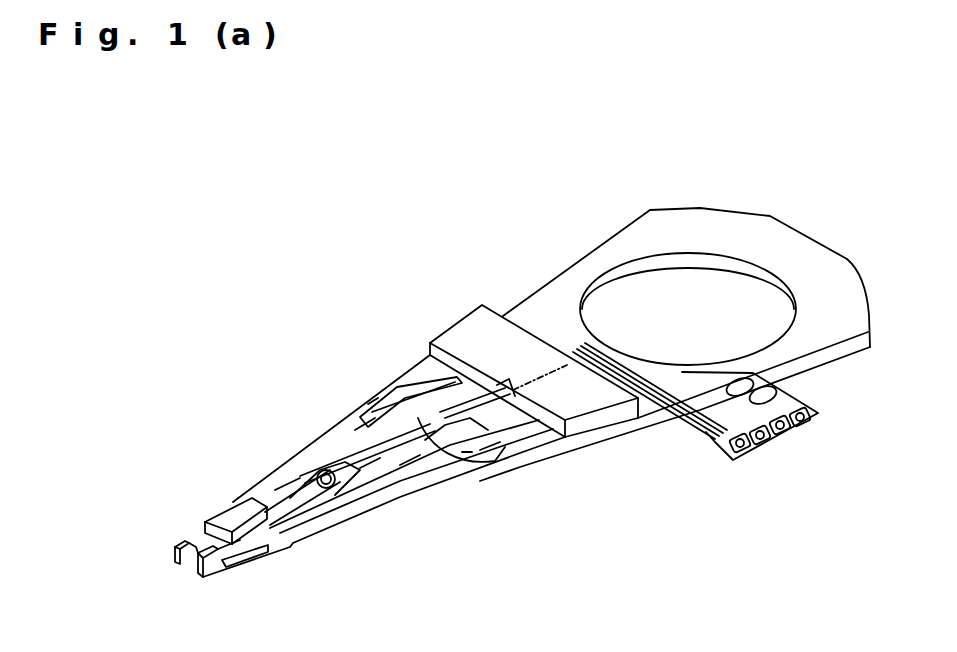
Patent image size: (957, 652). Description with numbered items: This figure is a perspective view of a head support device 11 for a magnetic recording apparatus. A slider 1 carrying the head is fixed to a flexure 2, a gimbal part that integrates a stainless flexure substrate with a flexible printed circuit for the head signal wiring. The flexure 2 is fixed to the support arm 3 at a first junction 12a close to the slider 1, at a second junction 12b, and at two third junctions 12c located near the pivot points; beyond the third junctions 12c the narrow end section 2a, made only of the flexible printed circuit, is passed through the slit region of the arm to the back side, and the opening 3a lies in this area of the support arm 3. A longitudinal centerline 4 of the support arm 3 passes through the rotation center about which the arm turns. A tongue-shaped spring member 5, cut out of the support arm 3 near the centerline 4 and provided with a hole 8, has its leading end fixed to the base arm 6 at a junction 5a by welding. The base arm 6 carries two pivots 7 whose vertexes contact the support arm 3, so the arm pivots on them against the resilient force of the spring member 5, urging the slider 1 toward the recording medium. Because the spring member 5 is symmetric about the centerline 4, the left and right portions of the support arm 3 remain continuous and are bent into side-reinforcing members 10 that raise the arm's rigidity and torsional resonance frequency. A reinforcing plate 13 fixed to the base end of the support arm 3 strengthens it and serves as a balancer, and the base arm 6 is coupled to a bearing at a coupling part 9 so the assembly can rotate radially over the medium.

The slider 1 is at (205, 524).
The flexure 2 is at (262, 510).
The end section 2a is at (628, 418).
The support arm 3 is at (323, 445).
The load beam opening 3a is at (493, 457).
The longitudinal centerline 4 is at (503, 392).
The spring member 5 is at (416, 400).
The junction 5a is at (408, 462).
The base arm 6 is at (530, 323).
The pivots 7 is at (365, 416).
The hole 8 is at (443, 492).
The coupling part 9 is at (752, 360).
The side-reinforcing members 10 is at (292, 548).
The head support device 11 is at (244, 253).
The first junction 12a is at (287, 478).
The second junction 12b is at (370, 463).
The third junctions 12c is at (372, 400).
The reinforcing plate 13 is at (456, 342).